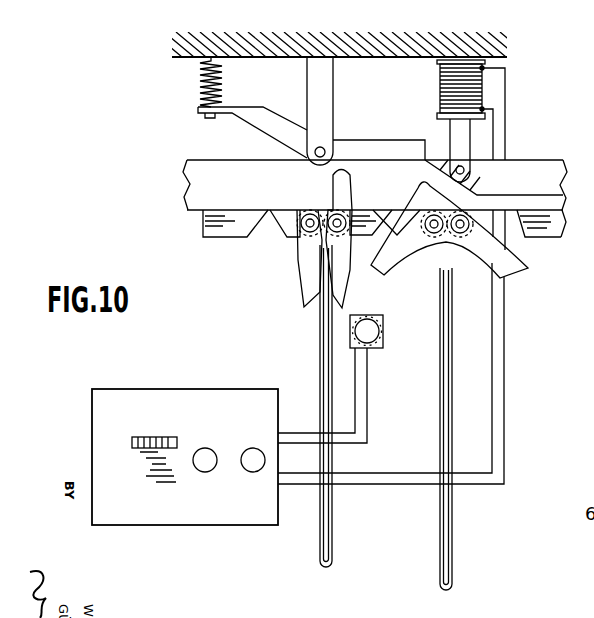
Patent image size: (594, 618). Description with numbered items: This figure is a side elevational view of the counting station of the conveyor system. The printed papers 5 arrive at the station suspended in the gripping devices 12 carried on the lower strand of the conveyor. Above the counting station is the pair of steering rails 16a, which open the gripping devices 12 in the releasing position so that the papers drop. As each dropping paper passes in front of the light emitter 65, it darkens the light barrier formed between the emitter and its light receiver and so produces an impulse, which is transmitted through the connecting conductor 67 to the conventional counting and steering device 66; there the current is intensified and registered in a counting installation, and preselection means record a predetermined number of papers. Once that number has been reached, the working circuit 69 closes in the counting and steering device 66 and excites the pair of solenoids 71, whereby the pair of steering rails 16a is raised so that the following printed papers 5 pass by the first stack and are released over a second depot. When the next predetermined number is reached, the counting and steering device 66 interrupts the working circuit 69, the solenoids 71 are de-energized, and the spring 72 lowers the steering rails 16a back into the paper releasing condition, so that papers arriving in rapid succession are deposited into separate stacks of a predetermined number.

The spring 72 is at (224, 82).
The solenoid 71 is at (437, 79).
The steering rail 16a is at (381, 152).
The gripping device 12 is at (308, 278).
The printed paper 5 is at (322, 388).
The light emitter 65 is at (384, 340).
The counting and steering device 66 is at (252, 389).
The conductor 67 is at (362, 412).
The working circuit 69 is at (500, 386).